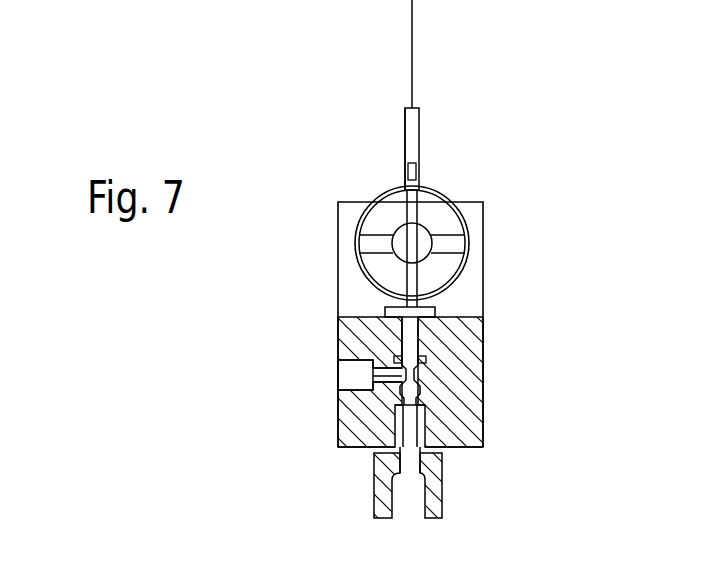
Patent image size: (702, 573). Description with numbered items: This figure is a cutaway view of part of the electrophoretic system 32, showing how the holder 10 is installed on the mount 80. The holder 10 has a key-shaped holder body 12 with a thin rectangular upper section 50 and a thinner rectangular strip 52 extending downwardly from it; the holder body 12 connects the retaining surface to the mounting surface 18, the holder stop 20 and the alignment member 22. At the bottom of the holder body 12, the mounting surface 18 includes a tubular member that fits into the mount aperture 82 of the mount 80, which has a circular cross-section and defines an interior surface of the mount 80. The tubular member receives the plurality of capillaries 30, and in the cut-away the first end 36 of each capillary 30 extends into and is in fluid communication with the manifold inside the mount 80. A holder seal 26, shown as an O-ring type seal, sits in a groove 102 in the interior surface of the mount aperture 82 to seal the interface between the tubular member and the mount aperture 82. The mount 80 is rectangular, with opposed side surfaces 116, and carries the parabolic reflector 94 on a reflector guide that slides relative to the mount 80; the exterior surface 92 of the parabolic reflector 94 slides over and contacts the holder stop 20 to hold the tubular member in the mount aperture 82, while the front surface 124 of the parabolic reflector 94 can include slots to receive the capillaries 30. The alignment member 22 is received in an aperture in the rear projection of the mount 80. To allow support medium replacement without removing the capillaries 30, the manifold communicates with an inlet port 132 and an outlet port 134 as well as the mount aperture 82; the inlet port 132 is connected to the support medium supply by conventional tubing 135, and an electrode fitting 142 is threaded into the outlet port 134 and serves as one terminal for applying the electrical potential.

The holder 10 is at (441, 99).
The holder body 12 is at (428, 133).
The mounting surface 18 is at (431, 330).
The holder stop 20 is at (448, 312).
The alignment member 22 is at (408, 168).
The holder seal 26 is at (430, 358).
The capillary 30 is at (414, 22).
The electrophoretic system 32 is at (519, 78).
The first end 36 is at (430, 440).
The upper section 50 is at (405, 125).
The strip 52 is at (370, 270).
The mount 80 is at (483, 412).
The mount aperture 82 is at (385, 309).
The exterior surface 92 is at (443, 297).
The parabolic reflector 94 is at (444, 183).
The groove 102 is at (338, 354).
The side surfaces 116 is at (338, 328).
The front surface 124 is at (378, 203).
The inlet port 132 is at (338, 385).
The outlet port 134 is at (457, 448).
The tubing 135 is at (403, 386).
The electrode fitting 142 is at (374, 508).